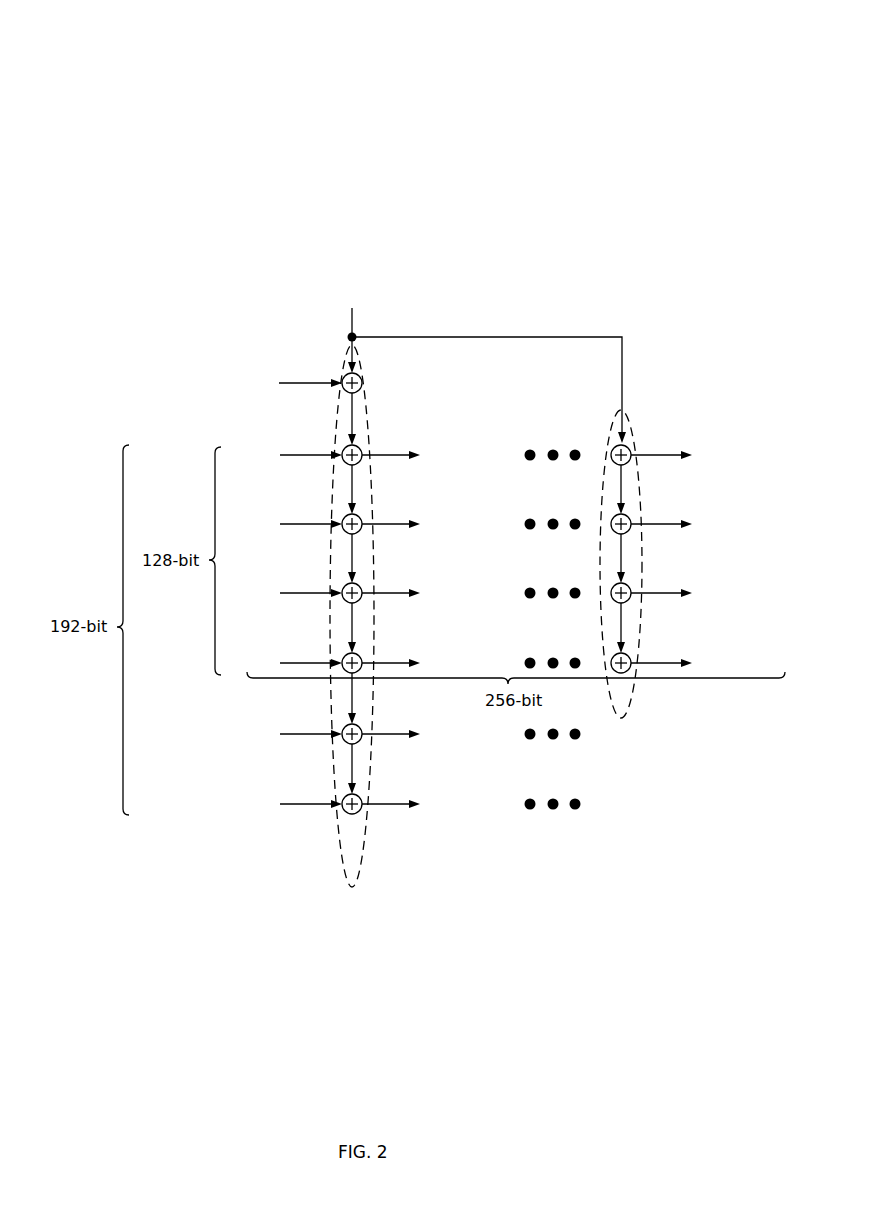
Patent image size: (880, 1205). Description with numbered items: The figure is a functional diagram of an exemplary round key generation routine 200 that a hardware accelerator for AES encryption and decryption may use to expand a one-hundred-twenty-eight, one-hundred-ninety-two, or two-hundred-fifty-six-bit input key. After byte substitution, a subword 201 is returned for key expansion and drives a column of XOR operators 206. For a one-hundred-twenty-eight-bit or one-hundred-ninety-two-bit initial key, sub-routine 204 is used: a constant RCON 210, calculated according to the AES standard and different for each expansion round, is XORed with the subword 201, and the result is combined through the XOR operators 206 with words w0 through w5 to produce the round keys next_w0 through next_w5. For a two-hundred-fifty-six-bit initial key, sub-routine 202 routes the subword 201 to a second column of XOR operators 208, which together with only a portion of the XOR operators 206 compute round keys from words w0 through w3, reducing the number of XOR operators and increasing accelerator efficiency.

The key generation routine 200 is at (102, 104).
The subword 201 is at (341, 290).
The sub-routine for 256-bit key 202 is at (502, 337).
The sub-routine for 128-bit or 192-bit key 204 is at (344, 369).
The XOR operators 206 is at (374, 424).
The XOR operators 208 is at (641, 441).
The RCON constant 210 is at (232, 367).